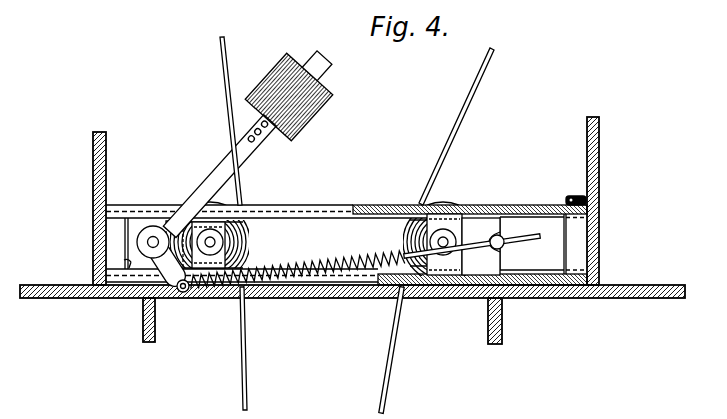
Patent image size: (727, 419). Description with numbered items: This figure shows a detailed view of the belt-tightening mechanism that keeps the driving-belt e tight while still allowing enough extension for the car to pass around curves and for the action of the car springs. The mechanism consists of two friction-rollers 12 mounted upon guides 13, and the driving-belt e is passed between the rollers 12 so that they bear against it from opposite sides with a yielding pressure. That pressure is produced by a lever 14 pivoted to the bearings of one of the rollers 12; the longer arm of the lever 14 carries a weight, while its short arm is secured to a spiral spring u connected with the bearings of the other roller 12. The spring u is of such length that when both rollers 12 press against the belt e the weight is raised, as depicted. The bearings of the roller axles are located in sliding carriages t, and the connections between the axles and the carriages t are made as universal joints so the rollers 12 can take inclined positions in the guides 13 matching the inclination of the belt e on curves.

The friction-roller 12 is at (248, 238).
The guide 13 is at (192, 217).
The lever 14 is at (219, 172).
The driving-belt e is at (453, 141).
The sliding carriage t is at (332, 246).
The spiral spring u is at (298, 264).